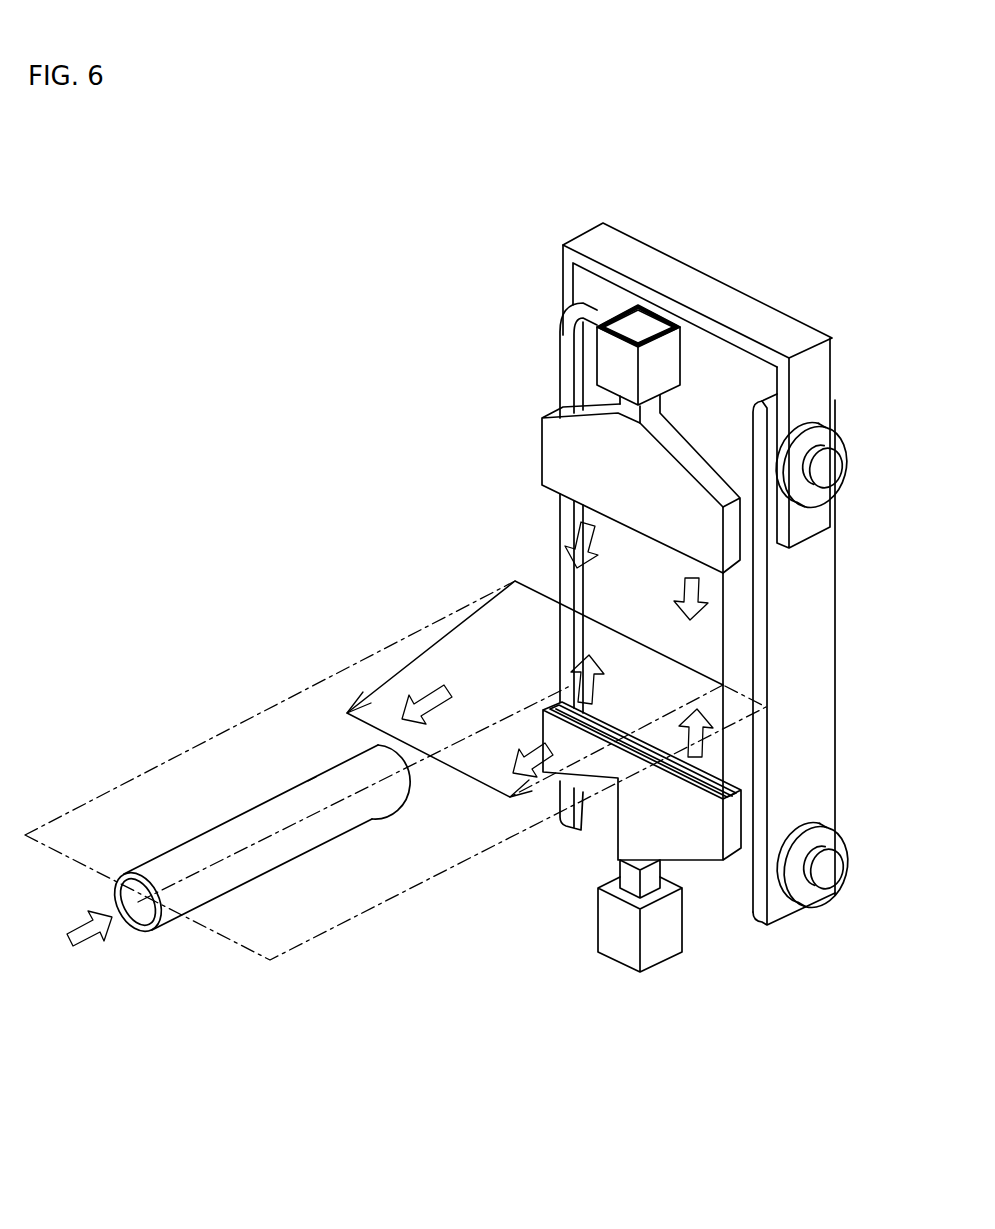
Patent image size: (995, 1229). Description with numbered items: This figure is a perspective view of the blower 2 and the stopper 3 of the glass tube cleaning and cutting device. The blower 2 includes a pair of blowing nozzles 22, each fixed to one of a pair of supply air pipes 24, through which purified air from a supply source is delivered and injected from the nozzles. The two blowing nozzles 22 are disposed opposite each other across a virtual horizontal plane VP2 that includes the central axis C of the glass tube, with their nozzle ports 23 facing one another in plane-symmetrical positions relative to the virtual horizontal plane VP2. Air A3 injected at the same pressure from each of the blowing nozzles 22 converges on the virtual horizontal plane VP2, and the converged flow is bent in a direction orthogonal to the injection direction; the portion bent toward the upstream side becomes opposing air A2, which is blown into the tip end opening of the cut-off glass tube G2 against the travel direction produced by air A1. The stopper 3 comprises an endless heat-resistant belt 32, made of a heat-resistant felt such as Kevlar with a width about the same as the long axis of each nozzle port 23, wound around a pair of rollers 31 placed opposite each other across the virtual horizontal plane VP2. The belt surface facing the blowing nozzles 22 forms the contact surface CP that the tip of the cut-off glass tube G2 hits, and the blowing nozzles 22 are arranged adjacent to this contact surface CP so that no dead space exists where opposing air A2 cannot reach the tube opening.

The blower 2 is at (506, 297).
The stopper 3 is at (706, 182).
The blowing nozzle 22 is at (565, 452).
The nozzle port 23 is at (572, 514).
The supply air pipe 24 is at (620, 360).
The roller 31 is at (824, 470).
The heat-resistant belt 32 is at (706, 406).
The central axis C is at (210, 864).
The cut-off glass tube G2 is at (308, 781).
The contact surface CP is at (657, 629).
The virtual horizontal plane VP2 is at (345, 932).
The air A1 is at (76, 942).
The opposing air A2 is at (450, 741).
The air A3 is at (639, 639).